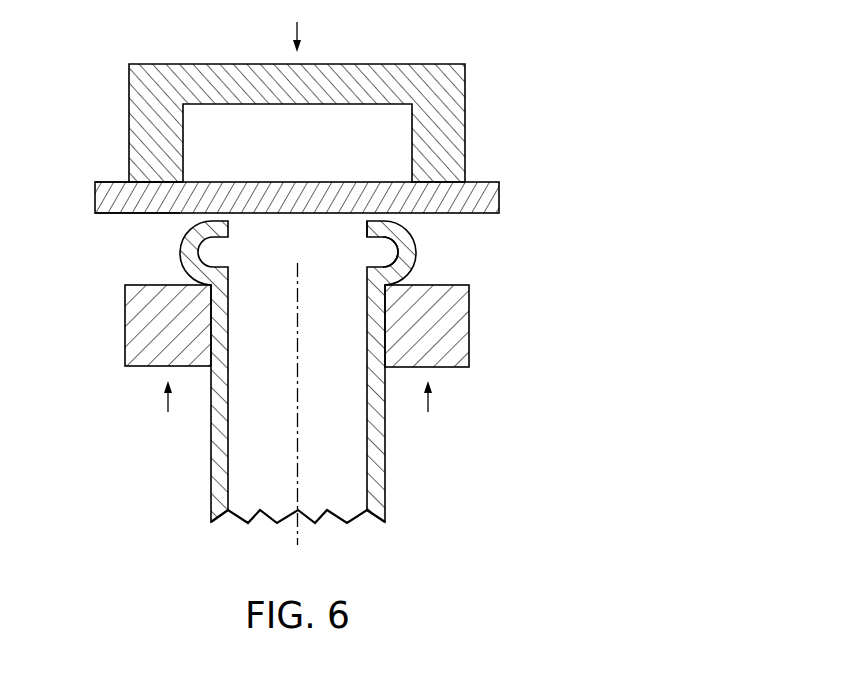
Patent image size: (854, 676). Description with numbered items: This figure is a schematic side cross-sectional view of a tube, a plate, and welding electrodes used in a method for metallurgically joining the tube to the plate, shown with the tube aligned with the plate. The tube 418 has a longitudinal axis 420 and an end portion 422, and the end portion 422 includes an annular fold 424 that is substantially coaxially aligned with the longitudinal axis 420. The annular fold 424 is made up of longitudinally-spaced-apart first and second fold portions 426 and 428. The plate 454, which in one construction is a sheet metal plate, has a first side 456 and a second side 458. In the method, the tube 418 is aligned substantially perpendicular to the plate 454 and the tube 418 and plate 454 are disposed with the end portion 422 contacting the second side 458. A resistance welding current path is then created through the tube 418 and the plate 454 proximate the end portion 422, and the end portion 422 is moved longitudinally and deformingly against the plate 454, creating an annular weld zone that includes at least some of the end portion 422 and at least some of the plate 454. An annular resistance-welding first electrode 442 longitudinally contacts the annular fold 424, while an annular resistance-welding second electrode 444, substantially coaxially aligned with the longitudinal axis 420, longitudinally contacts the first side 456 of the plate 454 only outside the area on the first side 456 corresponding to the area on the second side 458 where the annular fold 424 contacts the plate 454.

The tube 418 is at (271, 383).
The longitudinal axis 420 is at (298, 410).
The end portion 422 is at (176, 252).
The annular fold 424 is at (420, 246).
The first fold portion 426 is at (376, 239).
The second fold portion 428 is at (379, 266).
The first electrode 442 is at (460, 321).
The second electrode 444 is at (372, 64).
The plate 454 is at (480, 181).
The first side 456 is at (105, 181).
The second side 458 is at (98, 214).